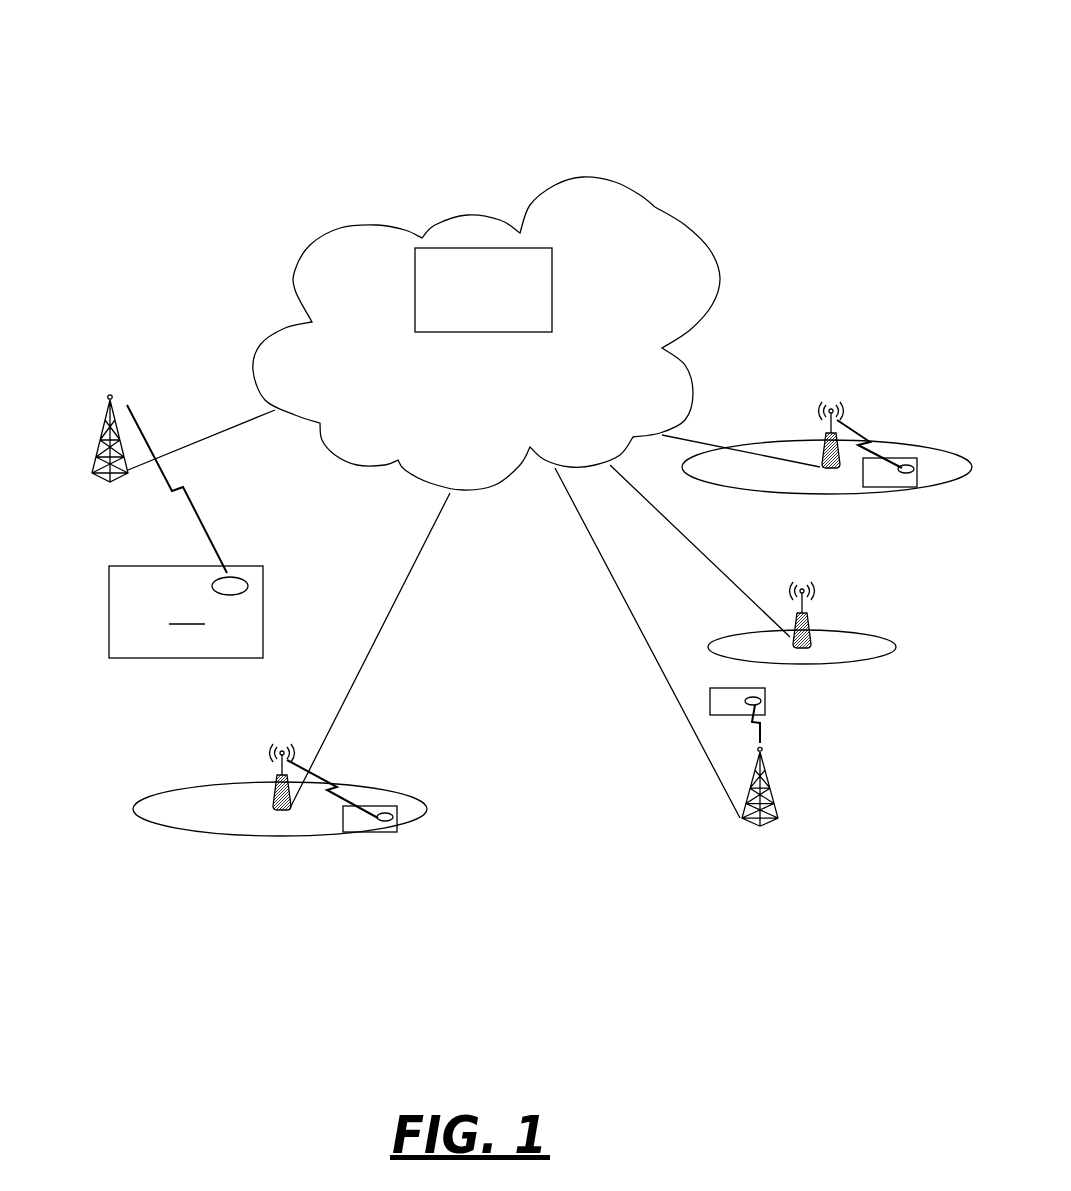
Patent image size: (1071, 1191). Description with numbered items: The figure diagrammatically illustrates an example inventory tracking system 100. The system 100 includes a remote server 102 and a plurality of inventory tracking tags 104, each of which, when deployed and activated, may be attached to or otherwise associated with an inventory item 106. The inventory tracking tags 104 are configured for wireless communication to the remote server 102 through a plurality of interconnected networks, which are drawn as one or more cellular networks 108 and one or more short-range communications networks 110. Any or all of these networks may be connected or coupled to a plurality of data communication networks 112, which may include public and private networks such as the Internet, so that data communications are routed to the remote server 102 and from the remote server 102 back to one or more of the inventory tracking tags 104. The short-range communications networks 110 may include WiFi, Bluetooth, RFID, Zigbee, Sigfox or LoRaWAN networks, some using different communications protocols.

The system 100 is at (713, 52).
The remote server 102 is at (483, 247).
The inventory tracking tag 104 is at (248, 585).
The inventory item 106 is at (186, 612).
The cellular network 108 is at (102, 440).
The short-range communications network 110 is at (228, 818).
The data communication network 112 is at (692, 225).